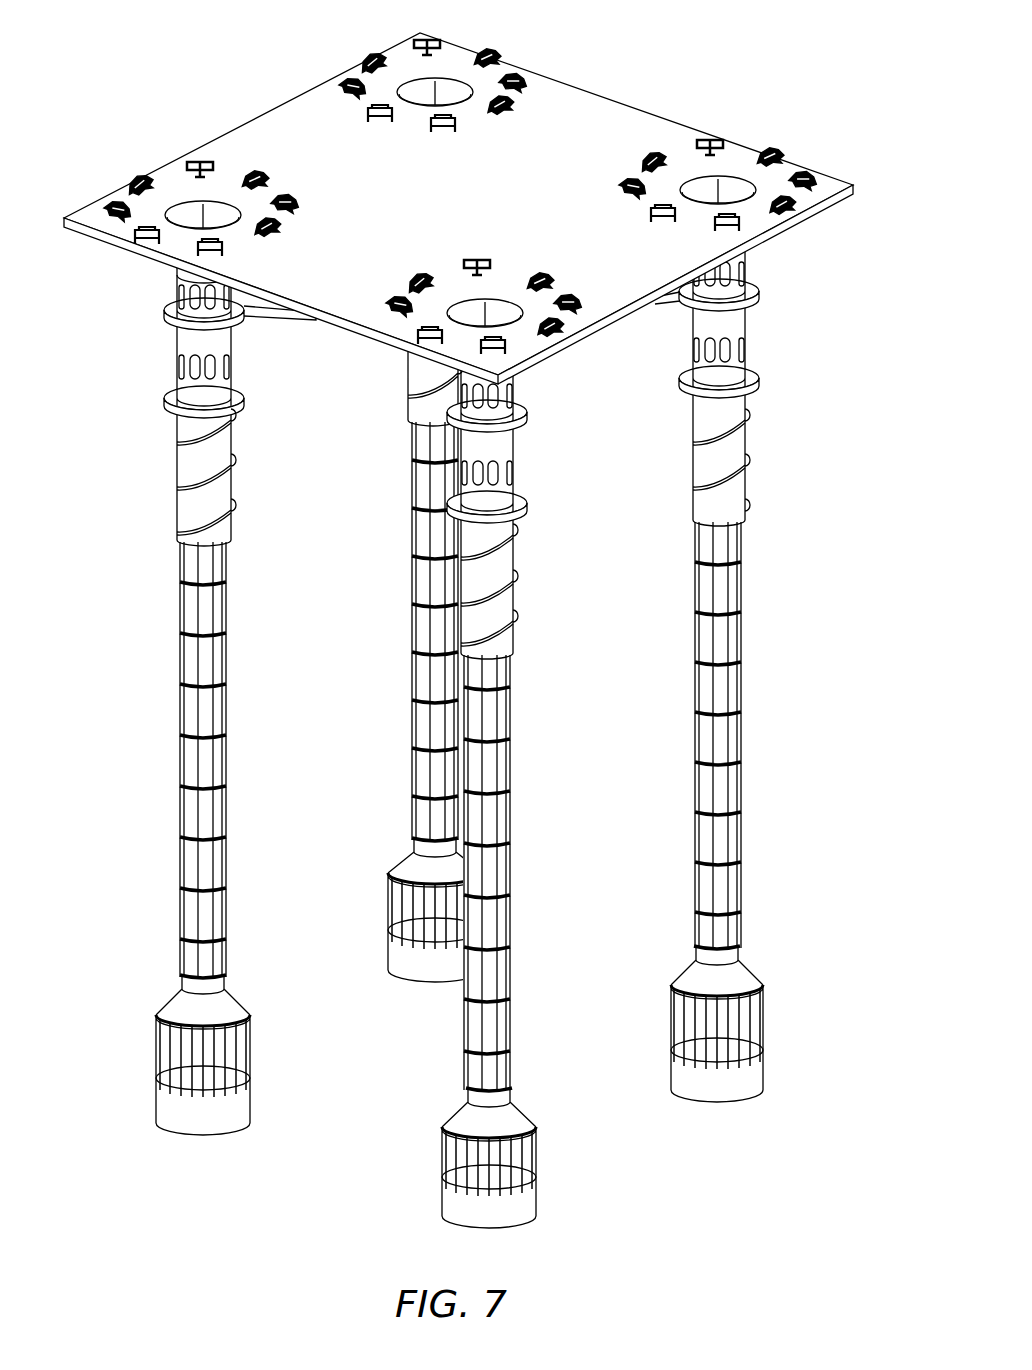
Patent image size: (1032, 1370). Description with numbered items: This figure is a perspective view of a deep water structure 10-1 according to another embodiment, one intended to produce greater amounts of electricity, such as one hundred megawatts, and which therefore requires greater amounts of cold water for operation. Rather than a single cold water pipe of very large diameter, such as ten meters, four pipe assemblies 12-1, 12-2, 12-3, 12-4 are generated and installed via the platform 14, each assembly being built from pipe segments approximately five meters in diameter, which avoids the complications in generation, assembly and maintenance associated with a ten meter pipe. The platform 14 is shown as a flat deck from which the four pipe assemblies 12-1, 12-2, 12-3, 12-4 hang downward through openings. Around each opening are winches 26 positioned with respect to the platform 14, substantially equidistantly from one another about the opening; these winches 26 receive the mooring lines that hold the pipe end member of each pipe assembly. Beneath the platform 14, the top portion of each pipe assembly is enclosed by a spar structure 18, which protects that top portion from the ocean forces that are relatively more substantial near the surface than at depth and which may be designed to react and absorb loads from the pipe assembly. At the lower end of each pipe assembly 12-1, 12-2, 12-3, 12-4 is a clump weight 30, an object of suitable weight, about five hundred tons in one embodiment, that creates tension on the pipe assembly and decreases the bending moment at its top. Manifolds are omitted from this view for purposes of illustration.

The deep water structure 10-1 is at (659, 71).
The pipe assembly 12-1 is at (224, 605).
The pipe assembly 12-2 is at (413, 630).
The pipe assembly 12-3 is at (507, 773).
The pipe assembly 12-4 is at (698, 730).
The platform 14 is at (462, 212).
The spar structure 18 is at (233, 447).
The winches 26 is at (290, 197).
The clump weight 30 is at (222, 1122).